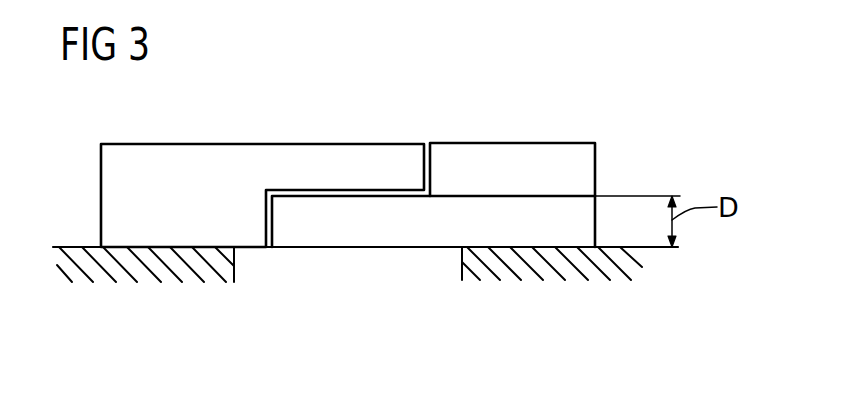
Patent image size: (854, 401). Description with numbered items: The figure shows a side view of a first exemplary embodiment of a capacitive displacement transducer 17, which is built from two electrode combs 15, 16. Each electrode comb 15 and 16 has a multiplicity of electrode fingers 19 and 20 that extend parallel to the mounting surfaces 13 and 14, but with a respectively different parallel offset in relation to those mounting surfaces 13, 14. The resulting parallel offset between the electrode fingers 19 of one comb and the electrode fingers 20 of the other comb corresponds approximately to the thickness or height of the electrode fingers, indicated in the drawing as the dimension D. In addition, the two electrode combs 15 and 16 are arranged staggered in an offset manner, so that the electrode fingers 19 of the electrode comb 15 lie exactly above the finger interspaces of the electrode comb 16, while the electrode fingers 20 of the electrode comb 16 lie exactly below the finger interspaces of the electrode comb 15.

The mounting surface 13 is at (83, 247).
The mounting surface 14 is at (608, 245).
The electrode comb 15 is at (262, 162).
The electrode fingers 19 is at (348, 153).
The electrode comb 16 is at (433, 253).
The electrode fingers 20 is at (348, 235).
The displacement transducer 17 is at (374, 173).